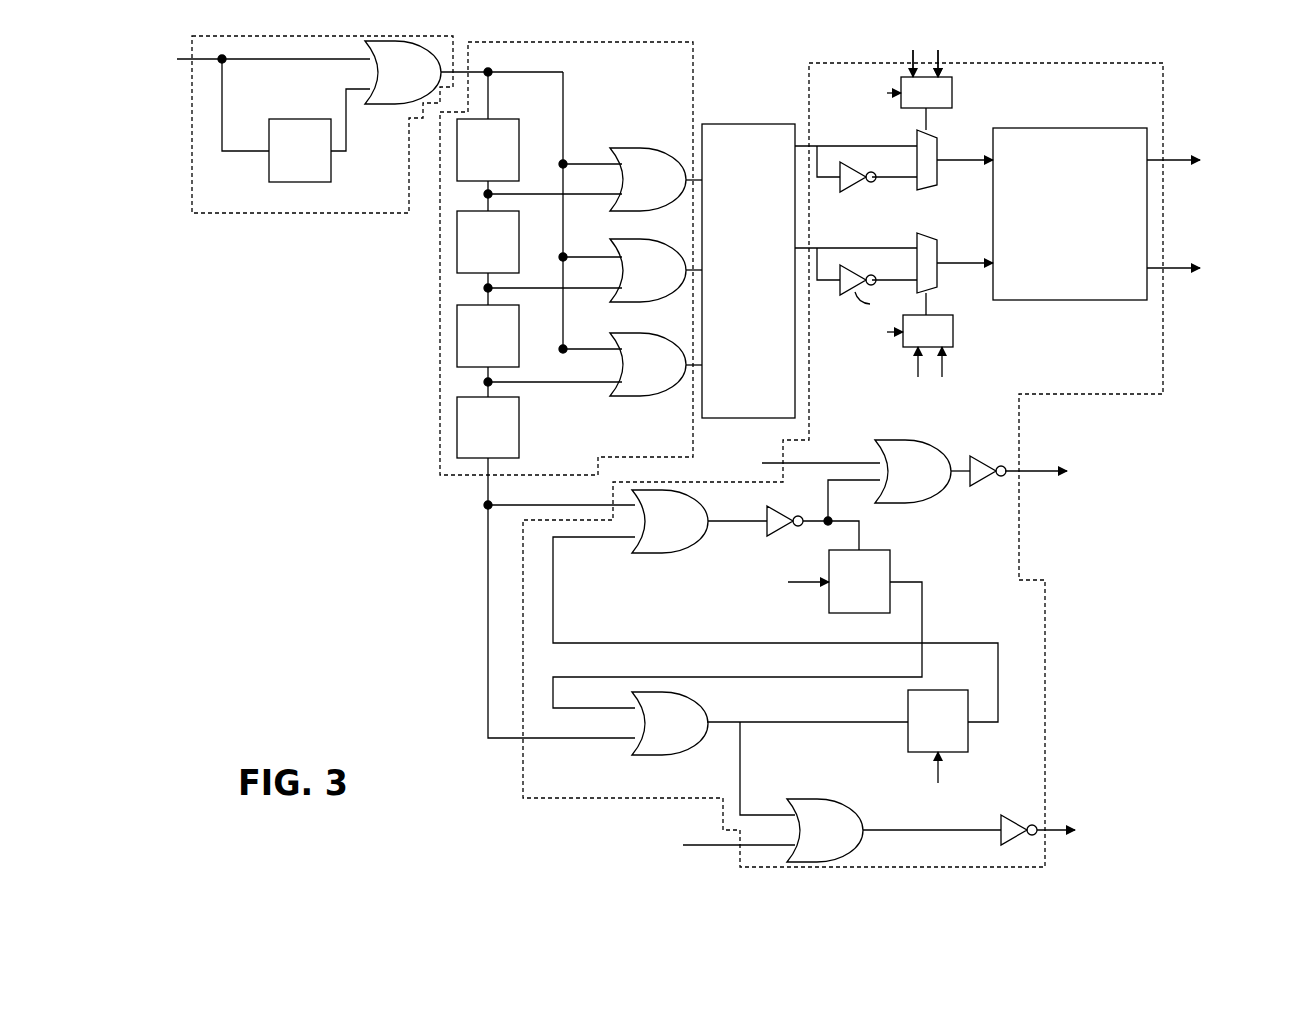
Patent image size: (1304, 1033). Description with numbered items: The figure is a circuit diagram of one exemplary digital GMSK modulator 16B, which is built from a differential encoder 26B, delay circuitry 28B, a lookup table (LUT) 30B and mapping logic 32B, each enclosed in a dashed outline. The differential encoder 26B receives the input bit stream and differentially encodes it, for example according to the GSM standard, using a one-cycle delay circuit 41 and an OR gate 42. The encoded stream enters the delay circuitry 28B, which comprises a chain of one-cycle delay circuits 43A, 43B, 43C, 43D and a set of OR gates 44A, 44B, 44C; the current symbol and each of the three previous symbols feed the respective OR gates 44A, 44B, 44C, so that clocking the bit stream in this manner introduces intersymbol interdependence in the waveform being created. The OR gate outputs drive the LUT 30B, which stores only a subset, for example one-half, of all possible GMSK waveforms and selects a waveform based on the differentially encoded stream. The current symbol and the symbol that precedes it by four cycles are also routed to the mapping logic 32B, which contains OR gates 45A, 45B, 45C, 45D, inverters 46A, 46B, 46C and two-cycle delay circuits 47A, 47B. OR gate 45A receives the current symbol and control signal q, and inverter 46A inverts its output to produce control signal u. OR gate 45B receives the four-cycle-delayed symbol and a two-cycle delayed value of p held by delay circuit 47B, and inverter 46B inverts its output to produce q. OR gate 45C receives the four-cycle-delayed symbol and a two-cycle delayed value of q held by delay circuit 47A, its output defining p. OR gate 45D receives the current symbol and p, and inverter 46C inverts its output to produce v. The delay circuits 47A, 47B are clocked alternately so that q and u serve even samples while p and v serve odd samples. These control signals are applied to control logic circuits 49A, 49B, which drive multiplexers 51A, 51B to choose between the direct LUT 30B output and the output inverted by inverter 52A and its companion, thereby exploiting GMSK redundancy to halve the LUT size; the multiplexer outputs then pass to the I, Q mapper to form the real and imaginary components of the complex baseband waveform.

The digital GMSK modulator 16B is at (374, 418).
The differential encoder 26B is at (240, 213).
The delay circuitry 28B is at (693, 88).
The lookup table (LUT) 30B is at (745, 124).
The mapping logic 32B is at (1019, 534).
The one-cycle delay circuit 41 is at (300, 182).
The OR gate 42 is at (390, 104).
The one-cycle delay circuit 43A is at (457, 152).
The one-cycle delay circuit 43B is at (457, 245).
The one-cycle delay circuit 43C is at (457, 336).
The one-cycle delay circuit 43D is at (457, 428).
The OR gate 44A is at (665, 148).
The OR gate 44B is at (665, 240).
The OR gate 44C is at (665, 333).
The OR gate 45A is at (896, 503).
The OR gate 45B is at (672, 553).
The OR gate 45C is at (672, 755).
The OR gate 45D is at (840, 800).
The inverter 46A is at (985, 456).
The inverter 46B is at (780, 506).
The inverter 46C is at (1005, 817).
The two-cycle delay circuit 47A is at (858, 613).
The two-cycle delay circuit 47B is at (935, 690).
The control logic circuit 49A is at (952, 97).
The control logic circuit 49B is at (953, 330).
The multiplexer 51A is at (937, 185).
The multiplexer 51B is at (937, 239).
The inverter 52A is at (853, 190).